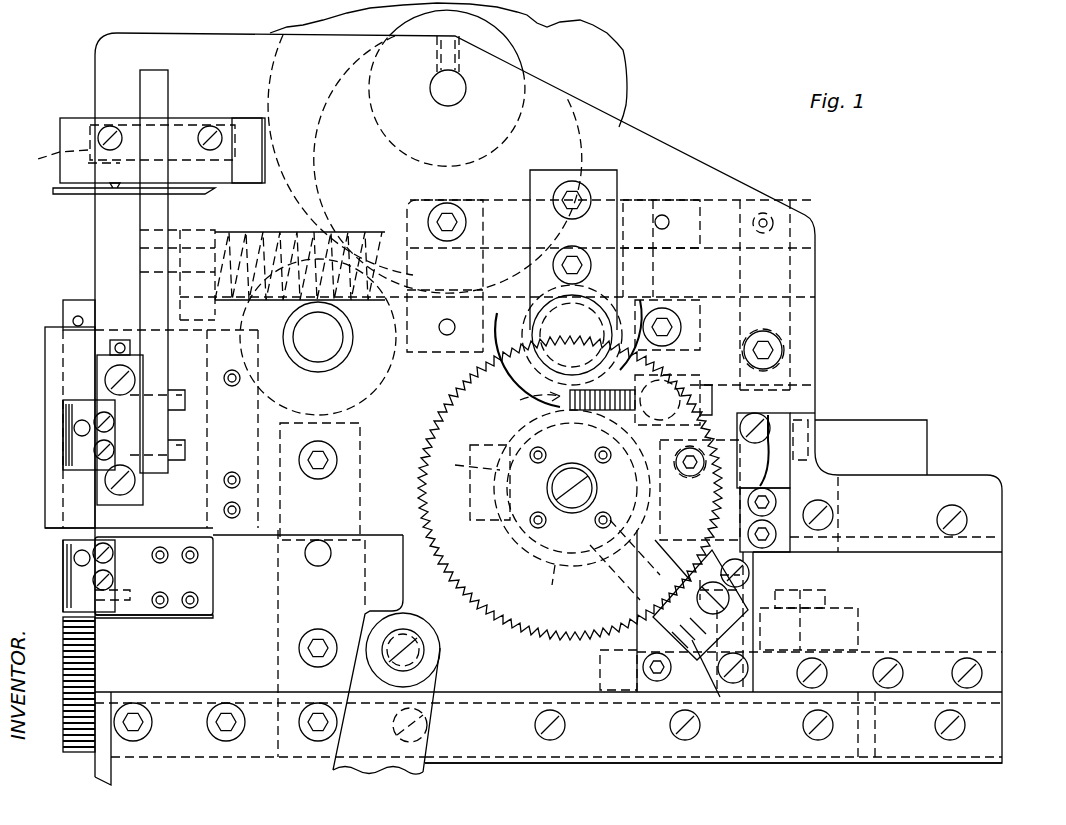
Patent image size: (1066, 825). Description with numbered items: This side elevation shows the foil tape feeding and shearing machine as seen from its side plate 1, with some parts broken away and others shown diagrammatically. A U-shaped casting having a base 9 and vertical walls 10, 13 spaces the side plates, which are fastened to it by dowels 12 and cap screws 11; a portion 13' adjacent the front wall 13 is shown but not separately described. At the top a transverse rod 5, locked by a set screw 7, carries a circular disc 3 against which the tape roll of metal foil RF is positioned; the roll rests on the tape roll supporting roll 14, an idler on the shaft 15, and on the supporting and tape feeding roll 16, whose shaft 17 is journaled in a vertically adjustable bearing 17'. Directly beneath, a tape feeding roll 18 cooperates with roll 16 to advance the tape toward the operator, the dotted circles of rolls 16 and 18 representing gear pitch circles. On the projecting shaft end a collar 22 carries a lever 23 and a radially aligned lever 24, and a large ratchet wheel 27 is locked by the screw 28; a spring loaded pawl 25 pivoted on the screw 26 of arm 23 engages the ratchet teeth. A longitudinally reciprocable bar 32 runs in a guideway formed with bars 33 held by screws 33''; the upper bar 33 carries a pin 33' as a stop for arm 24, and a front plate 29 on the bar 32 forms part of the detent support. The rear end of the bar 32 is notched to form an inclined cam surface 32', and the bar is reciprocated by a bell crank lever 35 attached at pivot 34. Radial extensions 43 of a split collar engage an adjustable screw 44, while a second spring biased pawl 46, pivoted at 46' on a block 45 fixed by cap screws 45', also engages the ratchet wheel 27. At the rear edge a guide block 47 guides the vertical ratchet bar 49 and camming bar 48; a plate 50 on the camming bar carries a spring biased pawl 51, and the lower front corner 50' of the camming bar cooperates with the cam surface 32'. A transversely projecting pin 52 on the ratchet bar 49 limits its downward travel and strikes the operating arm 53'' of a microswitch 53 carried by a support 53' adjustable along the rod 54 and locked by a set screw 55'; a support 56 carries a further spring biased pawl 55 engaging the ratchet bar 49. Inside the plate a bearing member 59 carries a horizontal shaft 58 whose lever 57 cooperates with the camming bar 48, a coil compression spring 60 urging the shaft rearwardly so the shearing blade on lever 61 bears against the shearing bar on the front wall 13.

The side plate 1 is at (690, 167).
The circular disc 3 is at (622, 65).
The rod 5 is at (455, 100).
The set screw 7 is at (437, 64).
The base 9 is at (465, 705).
The vertical wall 10 is at (275, 592).
The cap screw 11 is at (333, 462).
The dowel 12 is at (331, 553).
The front wall 13 is at (622, 567).
The bracket 13' is at (841, 440).
The tape roll supporting roll 14 is at (366, 378).
The shaft 15 is at (318, 337).
The supporting and tape feeding roll 16 is at (635, 300).
The shaft 17 is at (568, 346).
The adjustable bearing 17' is at (596, 237).
The tape feeding roll 18 is at (541, 588).
The collar 22 is at (585, 488).
The lever 23 is at (815, 598).
The lever 24 is at (563, 555).
The spring loaded pawl 25 is at (695, 620).
The screw 26 is at (750, 580).
The ratchet wheel 27 is at (420, 488).
The screw 28 is at (572, 463).
The front plate 29 is at (705, 695).
The bar 32 is at (819, 622).
The inclined cam surface 32' is at (386, 654).
The bar 33 is at (895, 618).
The projecting pin 33' is at (687, 489).
The screw 33'' is at (791, 617).
The pivot 34 is at (424, 652).
The bell crank lever 35 is at (428, 766).
The radial extension 43 is at (470, 482).
The adjustable screw 44 is at (712, 385).
The block 45 is at (797, 438).
The cap screw 45' is at (799, 570).
The spring biased pawl 46 is at (780, 517).
The pivot 46' is at (774, 424).
The guide block 47 is at (52, 355).
The camming bar 48 is at (230, 444).
The ratchet bar 49 is at (96, 652).
The plate 50 is at (174, 576).
The lower front corner 50' is at (177, 605).
The spring biased pawl 51 is at (62, 608).
The transversely projecting pin 52 is at (74, 318).
The microswitch 53 is at (140, 150).
The support 53' is at (238, 133).
The operating arm 53'' is at (131, 204).
The rod 54 is at (160, 93).
The spring biased pawl 55 is at (89, 455).
The set screw 55' is at (61, 165).
The support 56 is at (140, 490).
The lever 57 is at (195, 232).
The horizontal shaft 58 is at (300, 251).
The bearing member 59 is at (436, 340).
The coil compression spring 60 is at (410, 222).
The lever 61 is at (775, 222).
The tape roll of metal foil RF is at (425, 164).